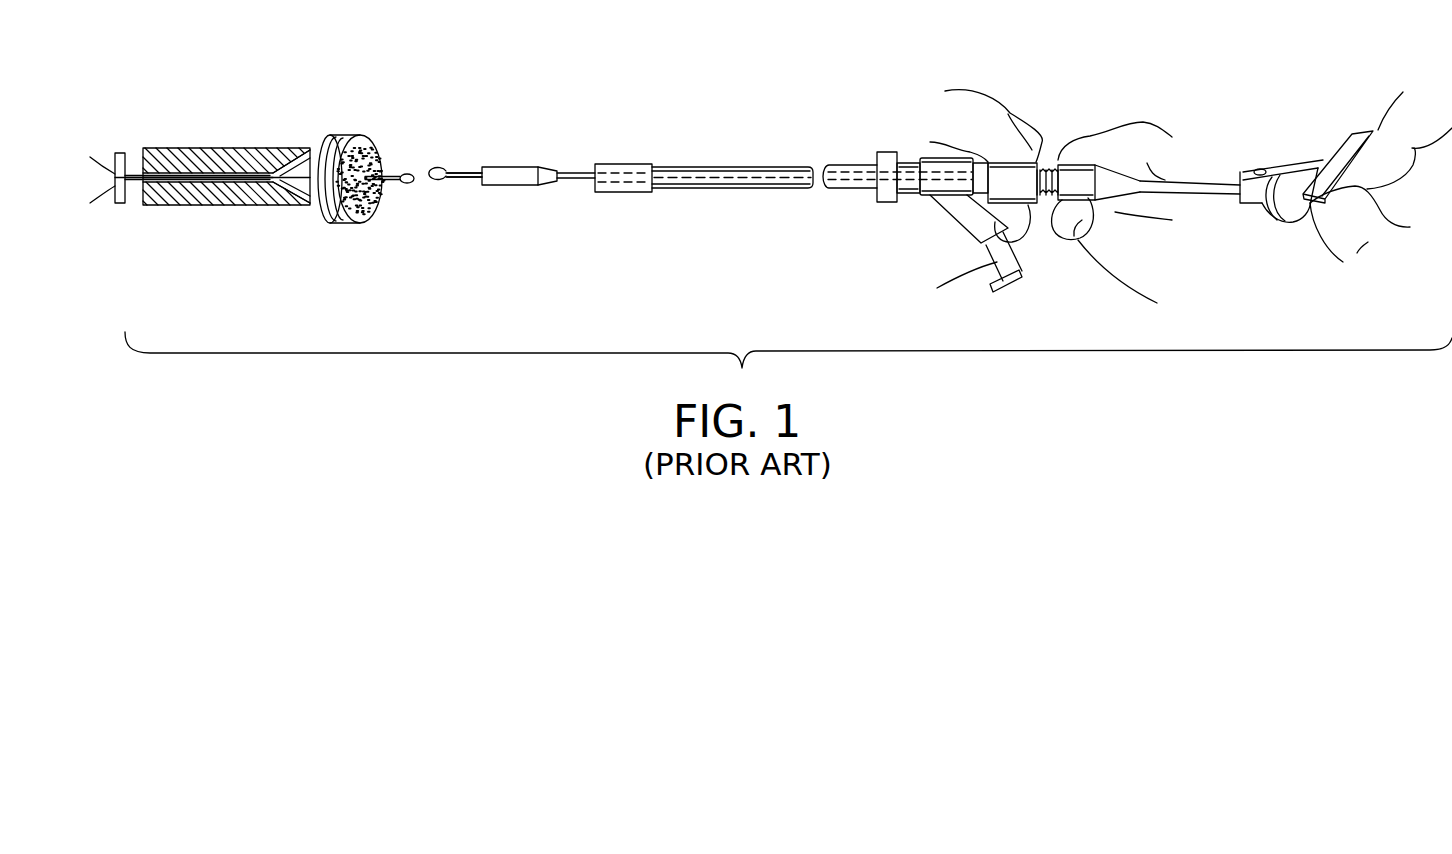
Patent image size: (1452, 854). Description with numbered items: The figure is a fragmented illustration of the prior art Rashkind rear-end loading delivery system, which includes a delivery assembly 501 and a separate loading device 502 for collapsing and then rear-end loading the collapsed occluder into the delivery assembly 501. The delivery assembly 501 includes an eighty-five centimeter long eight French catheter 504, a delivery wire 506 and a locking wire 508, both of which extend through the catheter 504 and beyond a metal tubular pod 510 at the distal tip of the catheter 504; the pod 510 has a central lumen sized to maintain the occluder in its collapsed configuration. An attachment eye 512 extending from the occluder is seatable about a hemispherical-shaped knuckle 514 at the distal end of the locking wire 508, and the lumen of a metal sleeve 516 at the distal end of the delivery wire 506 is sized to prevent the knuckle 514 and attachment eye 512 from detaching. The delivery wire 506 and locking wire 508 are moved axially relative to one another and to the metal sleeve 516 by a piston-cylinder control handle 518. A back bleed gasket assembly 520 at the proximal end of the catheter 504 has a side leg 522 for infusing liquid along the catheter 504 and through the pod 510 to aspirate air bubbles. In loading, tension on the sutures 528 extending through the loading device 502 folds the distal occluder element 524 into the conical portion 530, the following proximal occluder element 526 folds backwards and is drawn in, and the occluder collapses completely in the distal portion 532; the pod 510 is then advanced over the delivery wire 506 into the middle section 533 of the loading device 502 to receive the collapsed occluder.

The delivery assembly 501 is at (832, 146).
The loading device 502 is at (238, 134).
The catheter 504 is at (773, 167).
The delivery wire 506 is at (580, 182).
The locking wire 508 is at (463, 183).
The metal tubular pod 510 is at (627, 192).
The attachment eye 512 is at (408, 187).
The knuckle 514 is at (437, 160).
The metal sleeve 516 is at (512, 167).
The piston-cylinder control handle 518 is at (1277, 220).
The back bleed gasket assembly 520 is at (925, 185).
The side leg 522 is at (957, 223).
The distal occluder element 524 is at (357, 138).
The proximal occluder element 526 is at (402, 142).
The sutures 528 is at (317, 187).
The conical portion 530 is at (278, 152).
The distal portion 532 is at (166, 172).
The middle section 533 is at (248, 178).